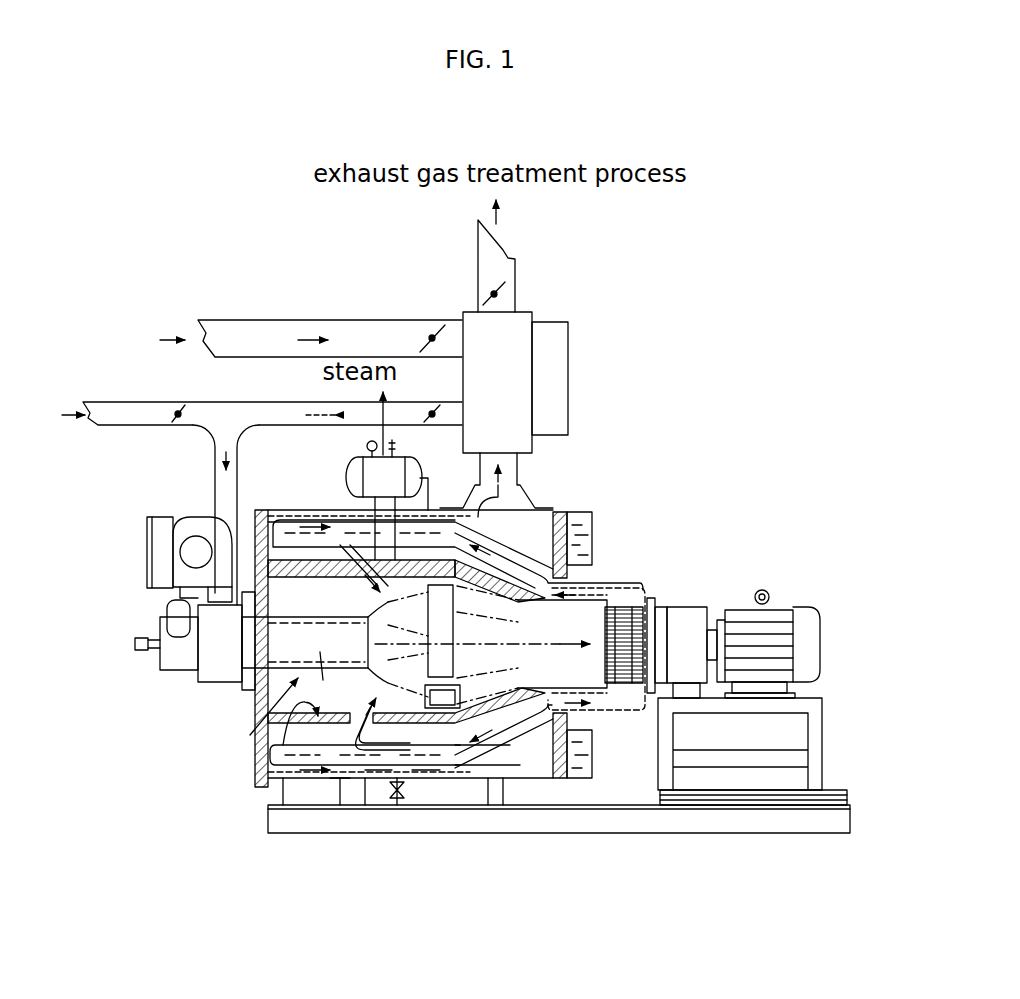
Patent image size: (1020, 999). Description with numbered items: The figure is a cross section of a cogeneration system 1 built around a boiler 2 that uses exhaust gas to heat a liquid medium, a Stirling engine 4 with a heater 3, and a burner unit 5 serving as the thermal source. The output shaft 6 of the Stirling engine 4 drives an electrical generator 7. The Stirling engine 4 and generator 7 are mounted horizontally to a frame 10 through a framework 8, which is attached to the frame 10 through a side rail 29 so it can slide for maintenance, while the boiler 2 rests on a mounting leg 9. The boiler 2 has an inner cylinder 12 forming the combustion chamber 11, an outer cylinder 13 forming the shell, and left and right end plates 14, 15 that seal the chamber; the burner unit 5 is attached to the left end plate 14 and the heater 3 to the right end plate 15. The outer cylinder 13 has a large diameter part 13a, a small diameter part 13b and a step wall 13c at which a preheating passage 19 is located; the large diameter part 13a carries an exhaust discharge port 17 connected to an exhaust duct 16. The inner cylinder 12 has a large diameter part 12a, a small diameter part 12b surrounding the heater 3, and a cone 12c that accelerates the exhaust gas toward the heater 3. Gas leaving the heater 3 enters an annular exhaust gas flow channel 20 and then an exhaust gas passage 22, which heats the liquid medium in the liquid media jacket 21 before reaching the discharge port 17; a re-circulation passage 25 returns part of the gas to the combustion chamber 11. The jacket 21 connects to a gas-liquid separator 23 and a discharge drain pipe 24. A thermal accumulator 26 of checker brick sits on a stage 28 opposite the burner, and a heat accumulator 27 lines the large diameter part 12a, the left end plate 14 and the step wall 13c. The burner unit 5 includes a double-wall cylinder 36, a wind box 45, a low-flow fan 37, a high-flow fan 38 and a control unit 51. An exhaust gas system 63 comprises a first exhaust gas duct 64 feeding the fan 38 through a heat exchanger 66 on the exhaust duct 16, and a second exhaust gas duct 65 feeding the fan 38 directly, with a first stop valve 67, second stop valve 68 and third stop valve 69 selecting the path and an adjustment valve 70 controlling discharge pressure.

The cogeneration system 1 is at (735, 342).
The boiler 2 is at (283, 449).
The heater 3 is at (653, 608).
The Stirling engine 4 is at (685, 615).
The burner unit 5 is at (300, 678).
The output shaft 6 is at (763, 600).
The electrical generator 7 is at (782, 606).
The framework 8 is at (815, 725).
The mounting leg 9 is at (305, 792).
The frame 10 is at (820, 815).
The combustion chamber 11 is at (514, 914).
The inner cylinder 12 is at (272, 787).
The large diameter part of inner cylinder 12a is at (290, 555).
The small diameter part of inner cylinder 12b is at (590, 600).
The cone 12c is at (540, 776).
The outer cylinder 13 is at (553, 505).
The large diameter part of outer cylinder 13a is at (323, 510).
The small diameter part of outer cylinder 13b is at (630, 700).
The step wall 13c is at (580, 779).
The left end plate 14 is at (258, 765).
The right end plate 15 is at (647, 578).
The exhaust duct 16 is at (478, 245).
The exhaust discharge port 17 is at (505, 482).
The preheating passage 19 is at (592, 523).
The exhaust gas flow channel 20 is at (613, 712).
The liquid media jacket 21 is at (378, 771).
The exhaust gas passage 22 is at (425, 772).
The gas-liquid separator 23 is at (422, 470).
The discharge drain pipe 24 is at (396, 808).
The re-circulation passage 25 is at (340, 782).
The thermal accumulator 26 is at (503, 540).
The heat accumulator 27 is at (308, 578).
The stage 28 is at (487, 710).
The side rail 29 is at (830, 795).
The double-wall cylinder 36 is at (330, 647).
The low-flow fan 37 is at (165, 617).
The high-flow fan 38 is at (195, 522).
The wind box 45 is at (200, 680).
The control unit 51 is at (150, 535).
The exhaust gas system 63 is at (137, 306).
The first exhaust gas duct 64 is at (232, 330).
The second exhaust gas duct 65 is at (113, 405).
The heat exchanger 66 is at (475, 333).
The first stop valve 67 is at (178, 412).
The second stop valve 68 is at (425, 350).
The third stop valve 69 is at (432, 414).
The adjustment valve 70 is at (507, 288).